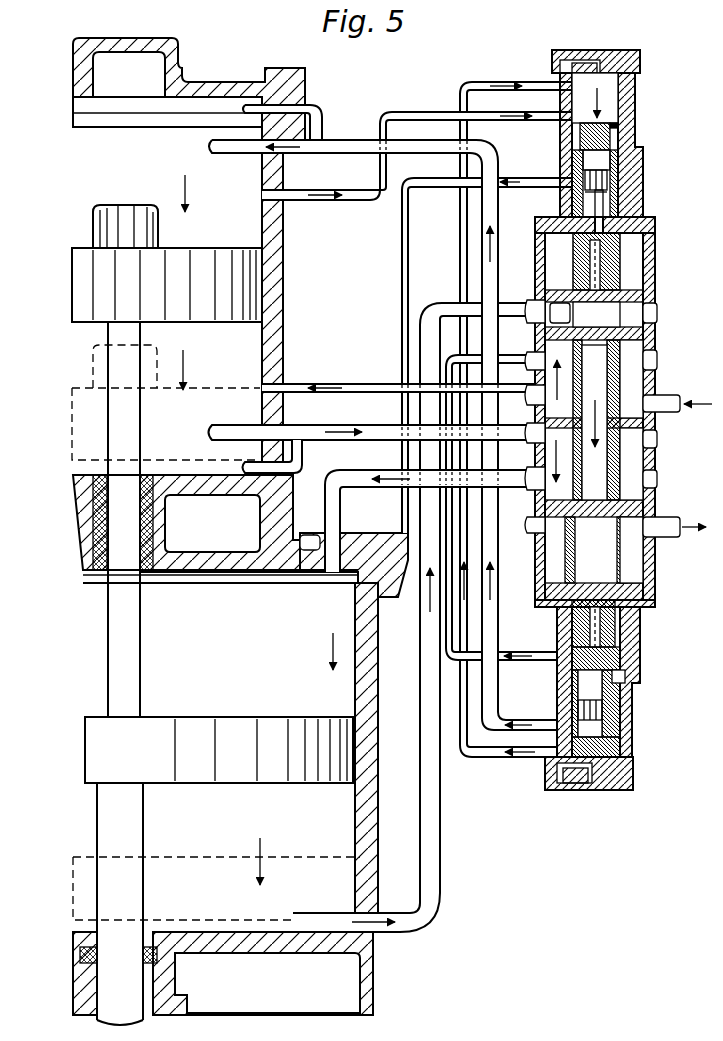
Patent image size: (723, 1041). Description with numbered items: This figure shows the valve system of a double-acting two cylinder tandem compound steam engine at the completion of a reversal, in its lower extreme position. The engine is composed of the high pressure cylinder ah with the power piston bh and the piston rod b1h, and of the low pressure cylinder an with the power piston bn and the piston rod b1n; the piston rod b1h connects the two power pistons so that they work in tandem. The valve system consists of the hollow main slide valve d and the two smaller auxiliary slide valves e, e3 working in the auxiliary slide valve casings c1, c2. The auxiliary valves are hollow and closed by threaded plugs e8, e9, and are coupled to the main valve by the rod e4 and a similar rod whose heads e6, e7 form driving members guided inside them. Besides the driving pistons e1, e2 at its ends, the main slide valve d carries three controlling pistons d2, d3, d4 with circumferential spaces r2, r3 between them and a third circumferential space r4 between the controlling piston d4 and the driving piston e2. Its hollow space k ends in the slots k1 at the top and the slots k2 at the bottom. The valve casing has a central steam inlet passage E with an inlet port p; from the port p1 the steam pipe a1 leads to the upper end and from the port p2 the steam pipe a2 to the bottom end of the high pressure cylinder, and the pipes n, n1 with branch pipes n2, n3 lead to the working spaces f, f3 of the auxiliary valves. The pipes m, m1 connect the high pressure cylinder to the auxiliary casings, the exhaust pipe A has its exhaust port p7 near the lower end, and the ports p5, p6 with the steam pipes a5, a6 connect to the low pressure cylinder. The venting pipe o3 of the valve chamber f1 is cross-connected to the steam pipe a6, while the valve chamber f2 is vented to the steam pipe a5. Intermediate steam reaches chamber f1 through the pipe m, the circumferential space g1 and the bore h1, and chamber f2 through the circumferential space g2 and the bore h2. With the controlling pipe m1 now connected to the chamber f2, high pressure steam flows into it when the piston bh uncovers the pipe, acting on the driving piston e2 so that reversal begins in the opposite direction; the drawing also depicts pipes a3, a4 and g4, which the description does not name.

The high pressure cylinder ah is at (262, 172).
The pipe a3 is at (322, 117).
The high pressure power piston bh is at (212, 323).
The piston rod b1h is at (130, 423).
The low pressure cylinder an is at (355, 688).
The low pressure power piston bn is at (163, 717).
The piston rod b1n is at (135, 820).
The pipe n is at (494, 82).
The pipe n1 is at (492, 758).
The branch pipe n2 is at (586, 58).
The branch pipe n3 is at (580, 790).
The pipe m is at (321, 200).
The controlling pipe m1 is at (326, 384).
The venting pipe o3 is at (402, 244).
The pipe g4 is at (525, 653).
The steam pipe a1 is at (482, 240).
The steam pipe a2 is at (331, 425).
The pipe a4 is at (292, 474).
The steam pipe a5 is at (440, 822).
The steam pipe a6 is at (364, 488).
The auxiliary slide valve casing c1 is at (638, 102).
The auxiliary slide valve casing c2 is at (634, 700).
The working space f is at (612, 82).
The valve chamber f1 is at (625, 262).
The valve chamber f2 is at (655, 604).
The working space f3 is at (633, 766).
The auxiliary slide valve e is at (612, 141).
The driving piston e1 is at (643, 294).
The driving piston e2 is at (643, 588).
The auxiliary slide valve e3 is at (620, 652).
The rod e4 is at (603, 210).
The head e6 is at (607, 193).
The head e7 is at (602, 712).
The threaded plug e8 is at (618, 125).
The threaded plug e9 is at (620, 745).
The circumferential space g1 is at (608, 182).
The circumferential space g2 is at (625, 678).
The bore h1 is at (645, 232).
The bore h2 is at (640, 625).
The main slide valve d is at (607, 368).
The controlling piston d2 is at (643, 336).
The controlling piston d3 is at (643, 422).
The controlling piston d4 is at (643, 505).
The hollow space k is at (594, 422).
The slots k1 is at (620, 315).
The slots k2 is at (622, 551).
The inlet port p is at (660, 394).
The port p1 is at (657, 360).
The port p2 is at (657, 440).
The port p5 is at (657, 313).
The port p6 is at (657, 480).
The exhaust port p7 is at (662, 516).
The circumferential space r2 is at (632, 378).
The circumferential space r3 is at (632, 460).
The circumferential space r4 is at (636, 552).
The steam inlet passage E is at (698, 406).
The exhaust pipe A is at (699, 528).